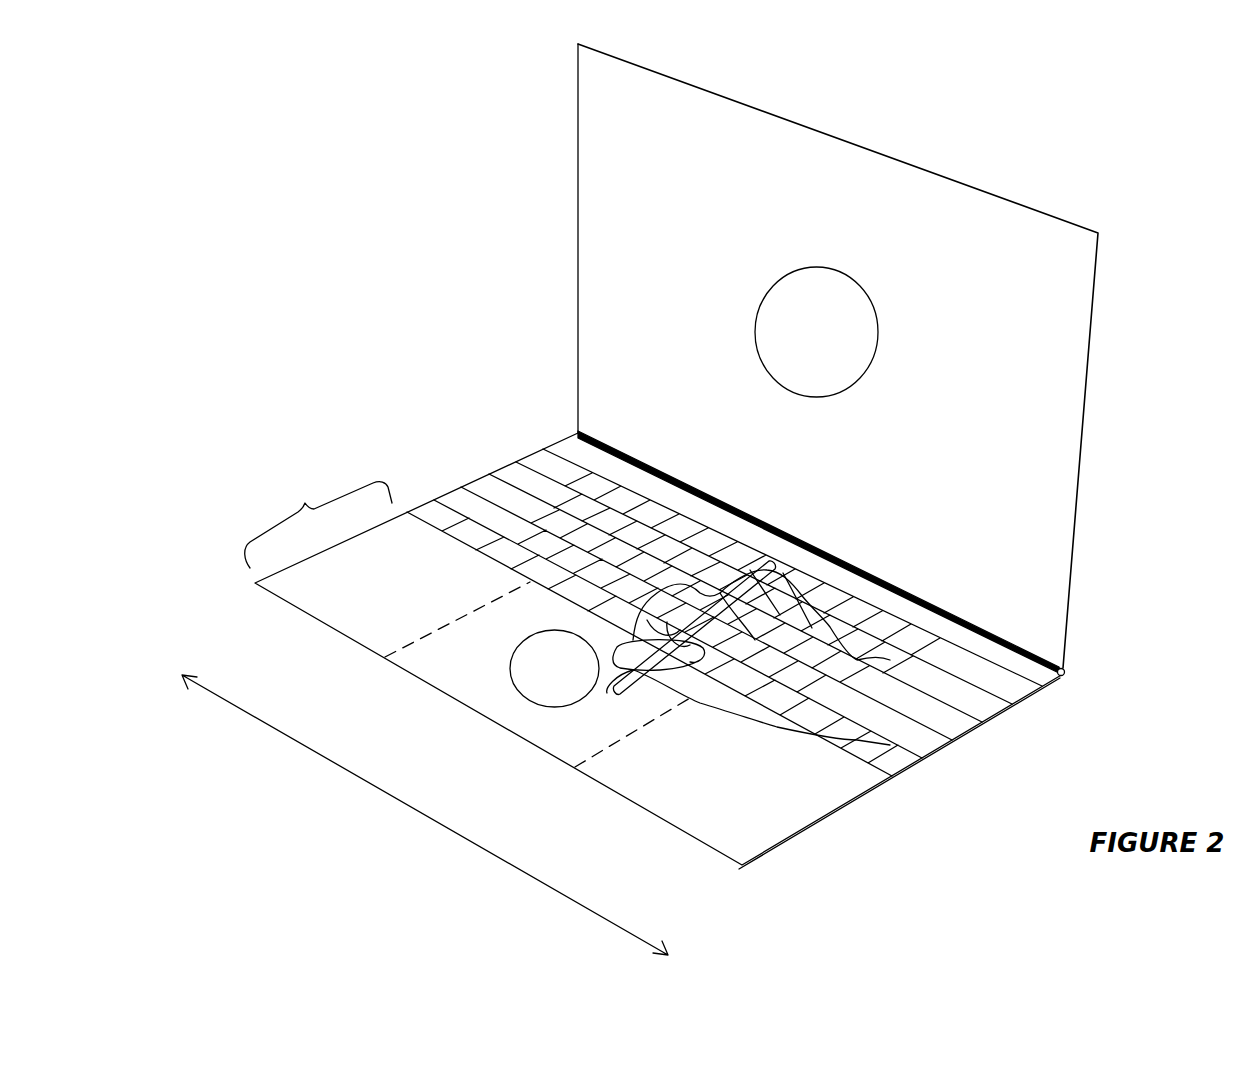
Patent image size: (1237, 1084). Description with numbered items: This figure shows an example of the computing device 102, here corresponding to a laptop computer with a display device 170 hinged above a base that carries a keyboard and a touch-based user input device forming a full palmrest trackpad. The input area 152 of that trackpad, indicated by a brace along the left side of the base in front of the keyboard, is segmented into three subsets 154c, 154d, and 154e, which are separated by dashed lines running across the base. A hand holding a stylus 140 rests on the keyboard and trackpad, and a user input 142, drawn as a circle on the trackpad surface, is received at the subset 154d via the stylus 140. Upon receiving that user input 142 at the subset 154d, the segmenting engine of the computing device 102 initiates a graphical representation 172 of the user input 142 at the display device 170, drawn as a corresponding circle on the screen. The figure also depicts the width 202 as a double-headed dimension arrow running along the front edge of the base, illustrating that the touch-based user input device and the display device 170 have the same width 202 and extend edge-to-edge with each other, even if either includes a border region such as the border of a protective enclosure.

The computing device 102 is at (514, 179).
The display device 170 is at (982, 188).
The graphical representation 172 is at (875, 355).
The input area 152 is at (305, 503).
The subset 154c is at (451, 616).
The subset 154d is at (463, 657).
The subset 154e is at (665, 739).
The user input 142 is at (526, 700).
The stylus 140 is at (637, 695).
The width 202 is at (373, 790).